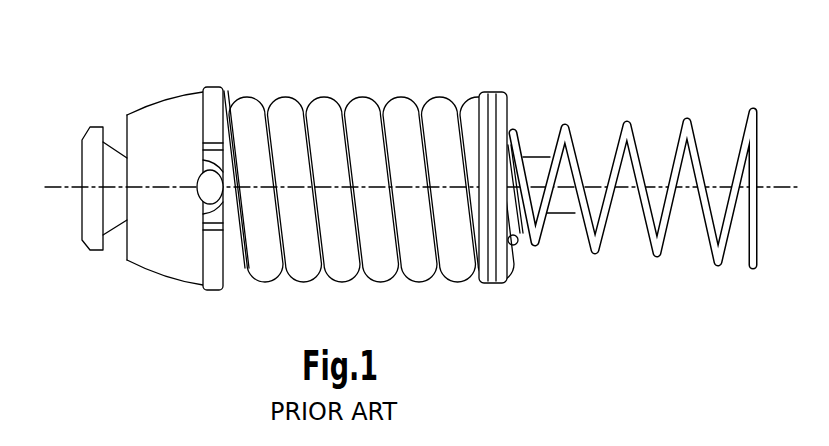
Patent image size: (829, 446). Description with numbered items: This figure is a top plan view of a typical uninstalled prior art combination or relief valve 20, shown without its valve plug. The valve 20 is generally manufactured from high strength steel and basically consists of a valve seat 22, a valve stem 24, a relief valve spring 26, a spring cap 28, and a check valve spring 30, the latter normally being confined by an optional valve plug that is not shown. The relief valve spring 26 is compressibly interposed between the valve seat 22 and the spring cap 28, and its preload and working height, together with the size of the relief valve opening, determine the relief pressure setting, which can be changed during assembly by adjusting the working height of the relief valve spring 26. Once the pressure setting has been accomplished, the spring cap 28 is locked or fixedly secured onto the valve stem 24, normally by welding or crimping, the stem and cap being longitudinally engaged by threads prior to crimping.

The combination or relief valve 20 is at (378, 62).
The valve seat 22 is at (175, 122).
The valve stem 24 is at (92, 138).
The relief valve spring 26 is at (327, 113).
The spring cap 28 is at (499, 107).
The check valve spring 30 is at (690, 120).